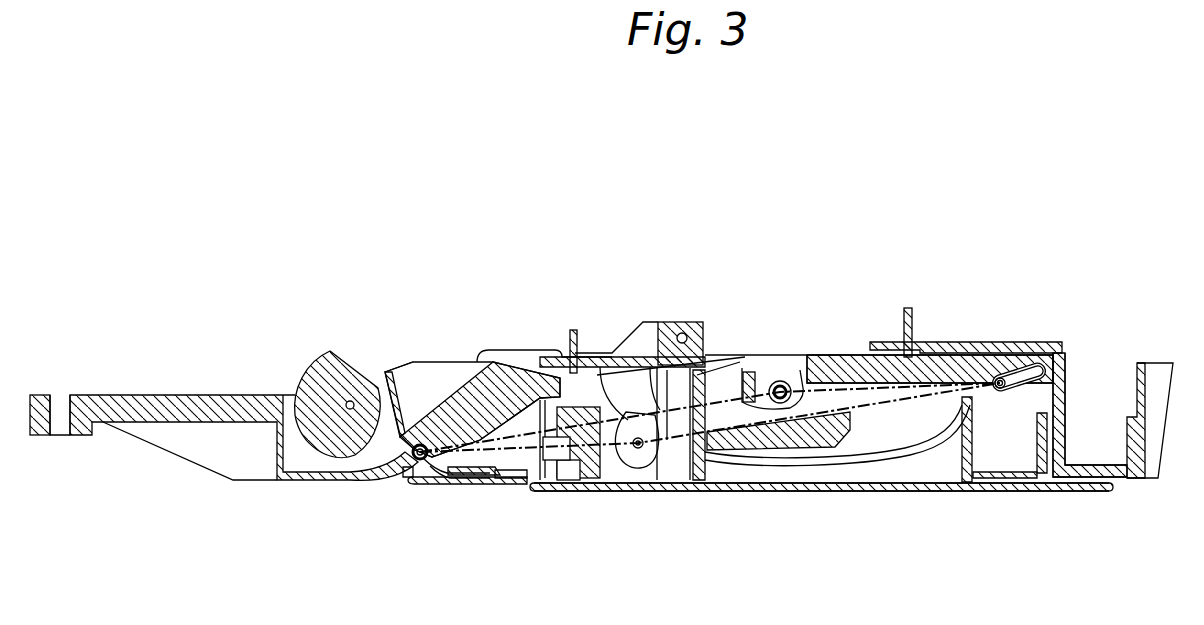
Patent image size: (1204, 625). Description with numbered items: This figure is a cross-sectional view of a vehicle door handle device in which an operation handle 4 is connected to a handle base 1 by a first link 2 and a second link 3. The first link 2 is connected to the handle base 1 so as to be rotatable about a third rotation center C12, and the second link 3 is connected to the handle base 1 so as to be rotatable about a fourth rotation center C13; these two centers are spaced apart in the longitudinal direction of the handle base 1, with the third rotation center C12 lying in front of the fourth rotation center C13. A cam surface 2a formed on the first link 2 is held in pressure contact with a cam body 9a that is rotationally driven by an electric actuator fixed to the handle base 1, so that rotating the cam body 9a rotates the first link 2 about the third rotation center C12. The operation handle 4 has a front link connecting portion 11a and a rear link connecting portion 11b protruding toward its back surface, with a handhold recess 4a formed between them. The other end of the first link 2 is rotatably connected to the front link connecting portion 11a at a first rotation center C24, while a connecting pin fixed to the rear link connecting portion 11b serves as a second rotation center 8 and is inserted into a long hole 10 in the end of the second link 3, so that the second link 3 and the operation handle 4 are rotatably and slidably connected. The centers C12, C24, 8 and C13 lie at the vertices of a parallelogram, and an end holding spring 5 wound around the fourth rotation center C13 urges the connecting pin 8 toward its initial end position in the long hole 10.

The handle base 1 is at (141, 406).
The cam body 9a is at (318, 372).
The first link 2 is at (466, 365).
The cam surface 2a is at (386, 360).
The third rotation center C12 is at (403, 475).
The end holding spring 5 is at (772, 358).
The fourth rotation center C13 is at (793, 362).
The first rotation center C24 is at (638, 455).
The second rotation center 8 is at (1010, 372).
The long hole 10 is at (1040, 370).
The second link 3 is at (968, 357).
The operation handle 4 is at (823, 488).
The handhold recess 4a is at (887, 460).
The front link connecting portion 11a is at (663, 490).
The rear link connecting portion 11b is at (1012, 460).